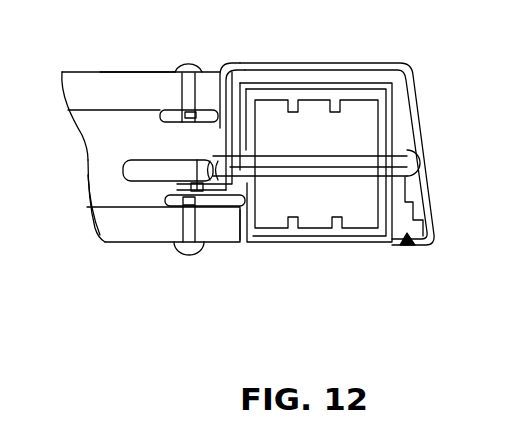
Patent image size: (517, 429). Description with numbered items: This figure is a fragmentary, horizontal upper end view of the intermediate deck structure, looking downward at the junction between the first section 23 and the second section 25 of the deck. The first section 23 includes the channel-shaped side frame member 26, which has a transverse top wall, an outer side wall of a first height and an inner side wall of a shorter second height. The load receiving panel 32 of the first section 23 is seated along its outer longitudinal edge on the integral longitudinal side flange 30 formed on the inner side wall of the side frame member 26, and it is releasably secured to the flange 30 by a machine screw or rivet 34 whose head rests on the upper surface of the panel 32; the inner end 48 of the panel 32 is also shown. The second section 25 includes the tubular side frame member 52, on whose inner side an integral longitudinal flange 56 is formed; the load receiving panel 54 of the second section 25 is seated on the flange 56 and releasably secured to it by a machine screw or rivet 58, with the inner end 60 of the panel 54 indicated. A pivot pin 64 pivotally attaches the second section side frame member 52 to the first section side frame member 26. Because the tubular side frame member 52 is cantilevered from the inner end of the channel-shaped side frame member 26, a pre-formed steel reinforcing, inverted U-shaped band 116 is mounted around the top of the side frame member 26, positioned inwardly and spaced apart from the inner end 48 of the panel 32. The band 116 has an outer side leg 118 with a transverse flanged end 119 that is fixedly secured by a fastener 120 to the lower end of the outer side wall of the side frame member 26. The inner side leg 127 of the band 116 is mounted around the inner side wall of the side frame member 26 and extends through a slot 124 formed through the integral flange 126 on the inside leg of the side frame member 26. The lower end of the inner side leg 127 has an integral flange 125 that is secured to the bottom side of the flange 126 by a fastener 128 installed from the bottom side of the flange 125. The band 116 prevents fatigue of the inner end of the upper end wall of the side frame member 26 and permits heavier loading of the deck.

The first section 23 is at (148, 72).
The second section 25 is at (144, 244).
The side frame member 26 is at (398, 96).
The longitudinal side flange 30 is at (165, 115).
The load receiving panel 32 is at (118, 72).
The machine screw or rivet 34 is at (192, 63).
The inner end of load receiving panel 48 is at (88, 93).
The side frame member 52 is at (338, 234).
The load receiving panel 54 is at (125, 220).
The longitudinal flange 56 is at (240, 200).
The machine screw or rivet 58 is at (186, 244).
The inner end of load receiving panel 60 is at (222, 224).
The pivot pin 64 is at (362, 166).
The steel reinforcing U-shaped band 116 is at (352, 63).
The outer side leg 118 is at (428, 172).
The transverse flanged end 119 is at (420, 242).
The fastener 120 is at (408, 250).
The slot 124 is at (226, 160).
The integral flange 125 is at (177, 185).
The integral flange 126 is at (127, 172).
The inner side leg 127 is at (224, 124).
The fastener 128 is at (197, 161).